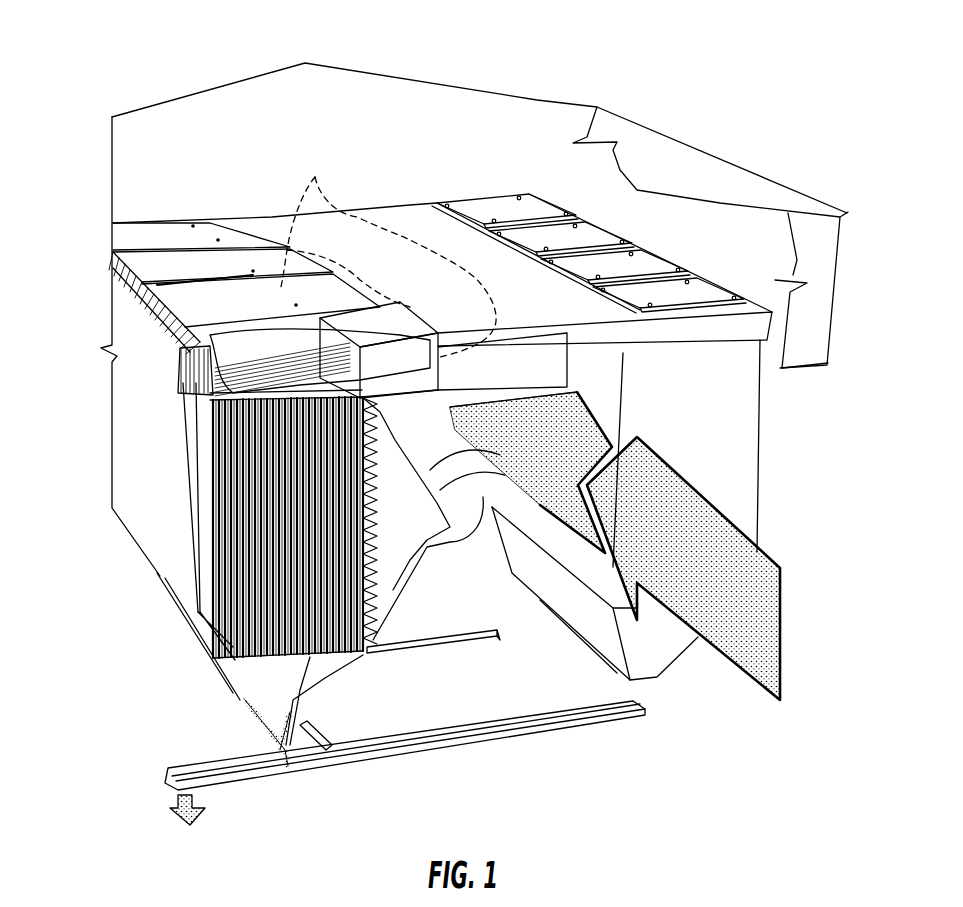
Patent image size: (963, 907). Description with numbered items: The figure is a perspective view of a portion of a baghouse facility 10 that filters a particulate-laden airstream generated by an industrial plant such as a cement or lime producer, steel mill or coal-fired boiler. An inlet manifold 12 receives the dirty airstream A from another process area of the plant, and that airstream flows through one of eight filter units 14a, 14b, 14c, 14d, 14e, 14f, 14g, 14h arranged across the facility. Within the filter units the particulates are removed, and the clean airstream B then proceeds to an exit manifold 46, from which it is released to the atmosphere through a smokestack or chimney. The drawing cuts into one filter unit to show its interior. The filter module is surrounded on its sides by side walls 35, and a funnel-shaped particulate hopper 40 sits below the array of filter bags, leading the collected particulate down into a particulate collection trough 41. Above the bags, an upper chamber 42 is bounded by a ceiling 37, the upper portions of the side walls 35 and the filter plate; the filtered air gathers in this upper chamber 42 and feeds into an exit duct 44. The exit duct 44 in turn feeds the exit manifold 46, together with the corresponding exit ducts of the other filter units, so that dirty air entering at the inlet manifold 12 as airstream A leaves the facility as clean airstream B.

The baghouse facility 10 is at (809, 155).
The inlet manifold 12 is at (578, 400).
The filter unit 14a is at (179, 480).
The filter unit 14b is at (192, 302).
The filter unit 14c is at (162, 270).
The filter unit 14d is at (162, 238).
The filter unit 14e is at (507, 210).
The filter unit 14f is at (582, 240).
The filter unit 14g is at (633, 265).
The filter unit 14h is at (710, 302).
The side walls 35 is at (207, 558).
The ceiling 37 is at (190, 333).
The particulate hopper 40 is at (327, 680).
The particulate collection trough 41 is at (232, 768).
The upper chamber 42 is at (293, 397).
The exit duct 44 is at (293, 275).
The exit manifold 46 is at (368, 220).
The dirty airstream A is at (762, 607).
The clean airstream B is at (257, 350).